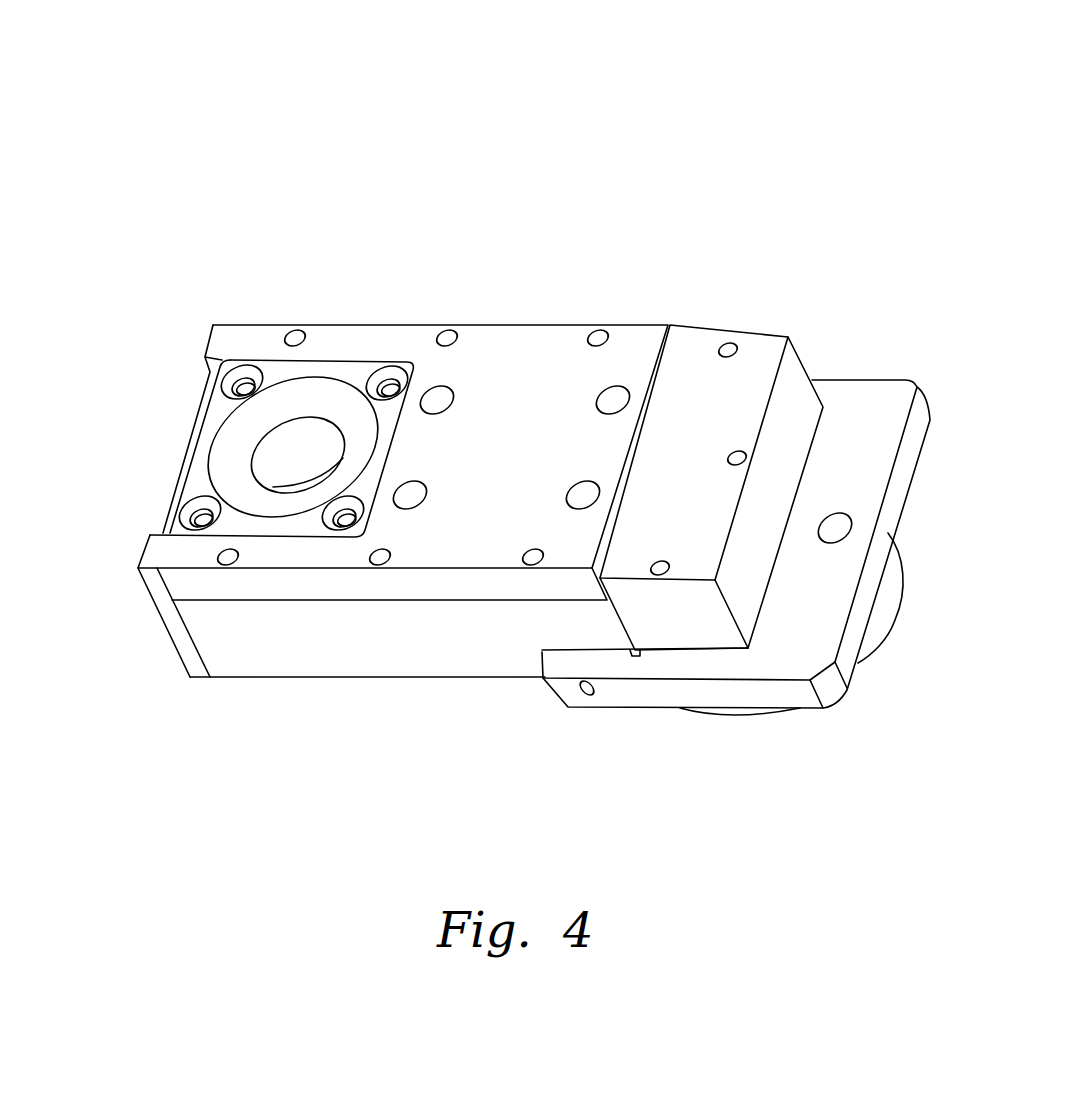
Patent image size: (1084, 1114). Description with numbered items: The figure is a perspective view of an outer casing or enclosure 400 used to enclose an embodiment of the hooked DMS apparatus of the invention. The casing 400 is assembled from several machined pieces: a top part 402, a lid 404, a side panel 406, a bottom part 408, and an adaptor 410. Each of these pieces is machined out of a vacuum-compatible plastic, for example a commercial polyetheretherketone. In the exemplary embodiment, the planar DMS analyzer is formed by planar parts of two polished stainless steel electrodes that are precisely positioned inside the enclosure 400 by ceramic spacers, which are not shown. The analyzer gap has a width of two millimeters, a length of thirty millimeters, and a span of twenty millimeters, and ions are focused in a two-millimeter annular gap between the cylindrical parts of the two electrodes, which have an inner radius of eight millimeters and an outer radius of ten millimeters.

The outer casing 400 is at (728, 103).
The top part 402 is at (530, 357).
The lid 404 is at (718, 370).
The side panel 406 is at (158, 623).
The bottom part 408 is at (375, 645).
The adaptor 410 is at (868, 410).